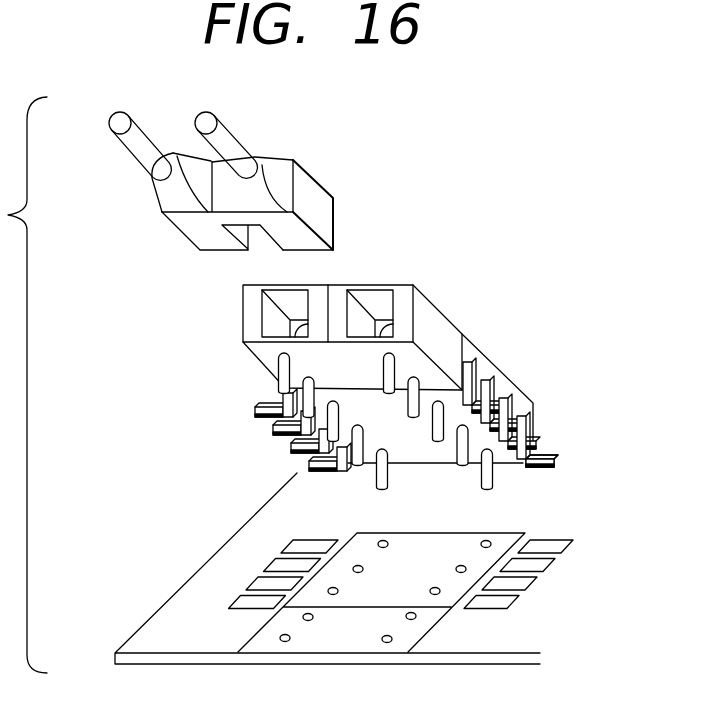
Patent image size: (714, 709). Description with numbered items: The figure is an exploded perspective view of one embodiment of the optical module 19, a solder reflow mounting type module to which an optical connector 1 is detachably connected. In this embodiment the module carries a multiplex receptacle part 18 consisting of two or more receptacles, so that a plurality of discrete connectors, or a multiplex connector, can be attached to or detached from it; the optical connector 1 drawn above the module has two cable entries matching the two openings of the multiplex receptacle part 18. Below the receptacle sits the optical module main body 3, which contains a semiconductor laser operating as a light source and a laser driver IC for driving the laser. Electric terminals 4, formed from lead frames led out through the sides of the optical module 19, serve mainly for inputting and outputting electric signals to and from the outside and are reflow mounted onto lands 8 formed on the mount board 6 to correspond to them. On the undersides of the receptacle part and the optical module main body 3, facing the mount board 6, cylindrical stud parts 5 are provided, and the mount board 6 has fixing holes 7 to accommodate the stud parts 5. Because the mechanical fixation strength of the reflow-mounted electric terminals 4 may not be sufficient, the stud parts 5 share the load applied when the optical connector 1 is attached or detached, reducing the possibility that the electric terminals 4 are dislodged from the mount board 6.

The optical connector 1 is at (323, 202).
The optical module main body 3 is at (497, 373).
The electric terminals 4 is at (548, 467).
The stud parts 5 is at (282, 385).
The mount board 6 is at (163, 635).
The fixing holes 7 is at (282, 637).
The lands 8 is at (548, 543).
The multiplex receptacle part 18 is at (442, 323).
The optical module 19 is at (493, 277).